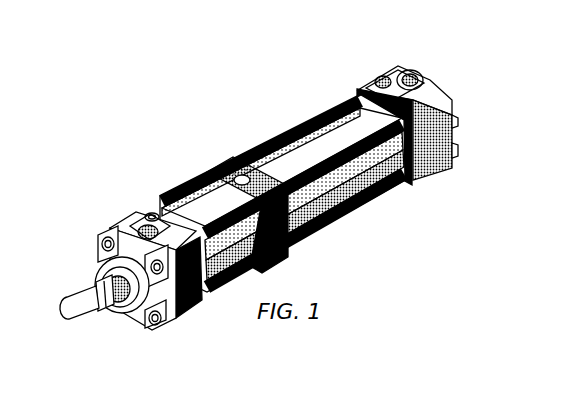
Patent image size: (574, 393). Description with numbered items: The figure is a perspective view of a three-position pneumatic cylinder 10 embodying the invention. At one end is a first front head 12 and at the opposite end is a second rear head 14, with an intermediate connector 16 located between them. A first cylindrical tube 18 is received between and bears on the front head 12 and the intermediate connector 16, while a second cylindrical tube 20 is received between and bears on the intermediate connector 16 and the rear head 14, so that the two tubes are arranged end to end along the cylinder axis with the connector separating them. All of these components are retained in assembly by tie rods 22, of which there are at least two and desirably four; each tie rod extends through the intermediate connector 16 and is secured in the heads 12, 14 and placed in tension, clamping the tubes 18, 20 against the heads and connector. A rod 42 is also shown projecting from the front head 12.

The three-position pneumatic cylinder 10 is at (232, 95).
The first front head 12 is at (125, 210).
The second rear head 14 is at (373, 67).
The intermediate connector 16 is at (222, 158).
The first cylindrical tube 18 is at (212, 212).
The second cylindrical tube 20 is at (278, 165).
The tie rods 22 is at (300, 116).
The piston rod 42 is at (95, 313).